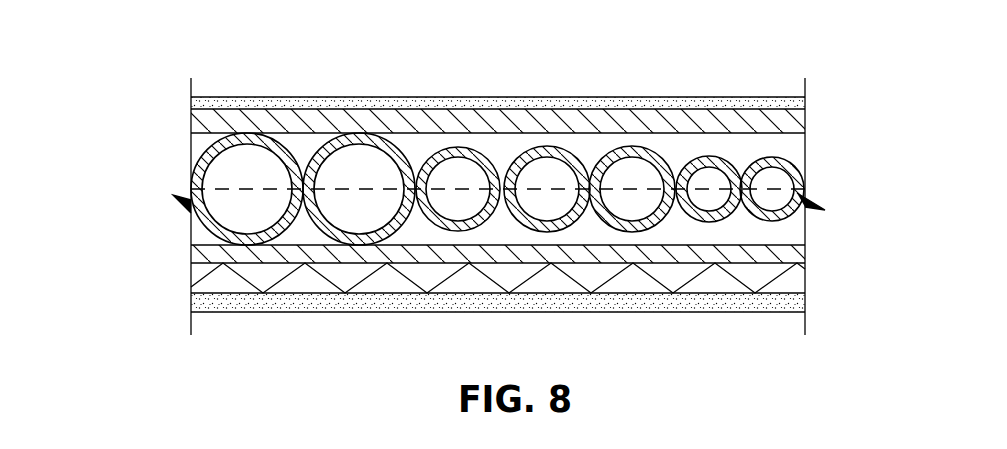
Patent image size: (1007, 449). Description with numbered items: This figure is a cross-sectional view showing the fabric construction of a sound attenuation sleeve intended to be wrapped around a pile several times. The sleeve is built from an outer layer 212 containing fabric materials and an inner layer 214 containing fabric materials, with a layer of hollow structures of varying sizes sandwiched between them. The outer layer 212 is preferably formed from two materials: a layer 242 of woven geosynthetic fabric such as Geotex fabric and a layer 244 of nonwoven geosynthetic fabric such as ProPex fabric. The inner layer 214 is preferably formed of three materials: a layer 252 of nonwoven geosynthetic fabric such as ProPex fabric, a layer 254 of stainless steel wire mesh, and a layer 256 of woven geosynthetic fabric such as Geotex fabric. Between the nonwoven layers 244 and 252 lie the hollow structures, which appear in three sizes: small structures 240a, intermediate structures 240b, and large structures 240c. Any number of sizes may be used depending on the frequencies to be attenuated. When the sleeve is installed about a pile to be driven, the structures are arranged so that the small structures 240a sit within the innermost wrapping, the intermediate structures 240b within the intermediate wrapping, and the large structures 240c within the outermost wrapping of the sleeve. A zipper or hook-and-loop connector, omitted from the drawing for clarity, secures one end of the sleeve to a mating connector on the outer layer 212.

The outer layer 212 is at (478, 79).
The inner layer 214 is at (478, 243).
The small hollow structures 240a is at (710, 170).
The intermediate hollow structures 240b is at (460, 160).
The large hollow structures 240c is at (240, 160).
The woven geosynthetic fabric layer 242 is at (191, 103).
The nonwoven geosynthetic fabric layer 244 is at (191, 122).
The nonwoven geosynthetic fabric layer 252 is at (191, 258).
The stainless steel wire mesh 254 is at (191, 280).
The woven geosynthetic fabric layer 256 is at (191, 297).